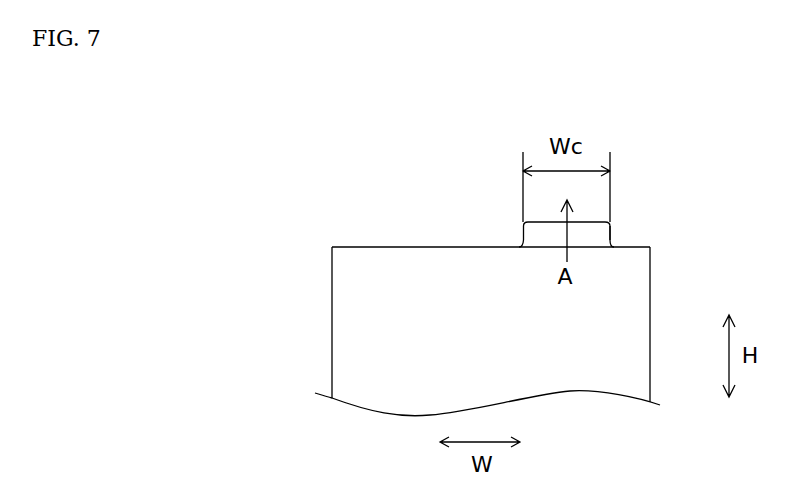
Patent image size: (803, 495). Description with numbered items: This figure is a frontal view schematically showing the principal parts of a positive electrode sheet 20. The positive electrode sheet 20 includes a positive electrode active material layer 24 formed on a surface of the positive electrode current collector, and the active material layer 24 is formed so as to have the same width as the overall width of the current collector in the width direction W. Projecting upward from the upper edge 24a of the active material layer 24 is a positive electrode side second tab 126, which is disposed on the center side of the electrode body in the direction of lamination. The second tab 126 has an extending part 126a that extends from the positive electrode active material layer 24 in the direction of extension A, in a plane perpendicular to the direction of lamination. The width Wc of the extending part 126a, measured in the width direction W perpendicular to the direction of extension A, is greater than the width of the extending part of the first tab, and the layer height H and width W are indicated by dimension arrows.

The positive electrode sheet 20 is at (461, 272).
The positive electrode active material layer 24 is at (340, 329).
The top surface of base layer 24a is at (388, 247).
The second tab 126 is at (573, 218).
The extending part 126a is at (608, 240).